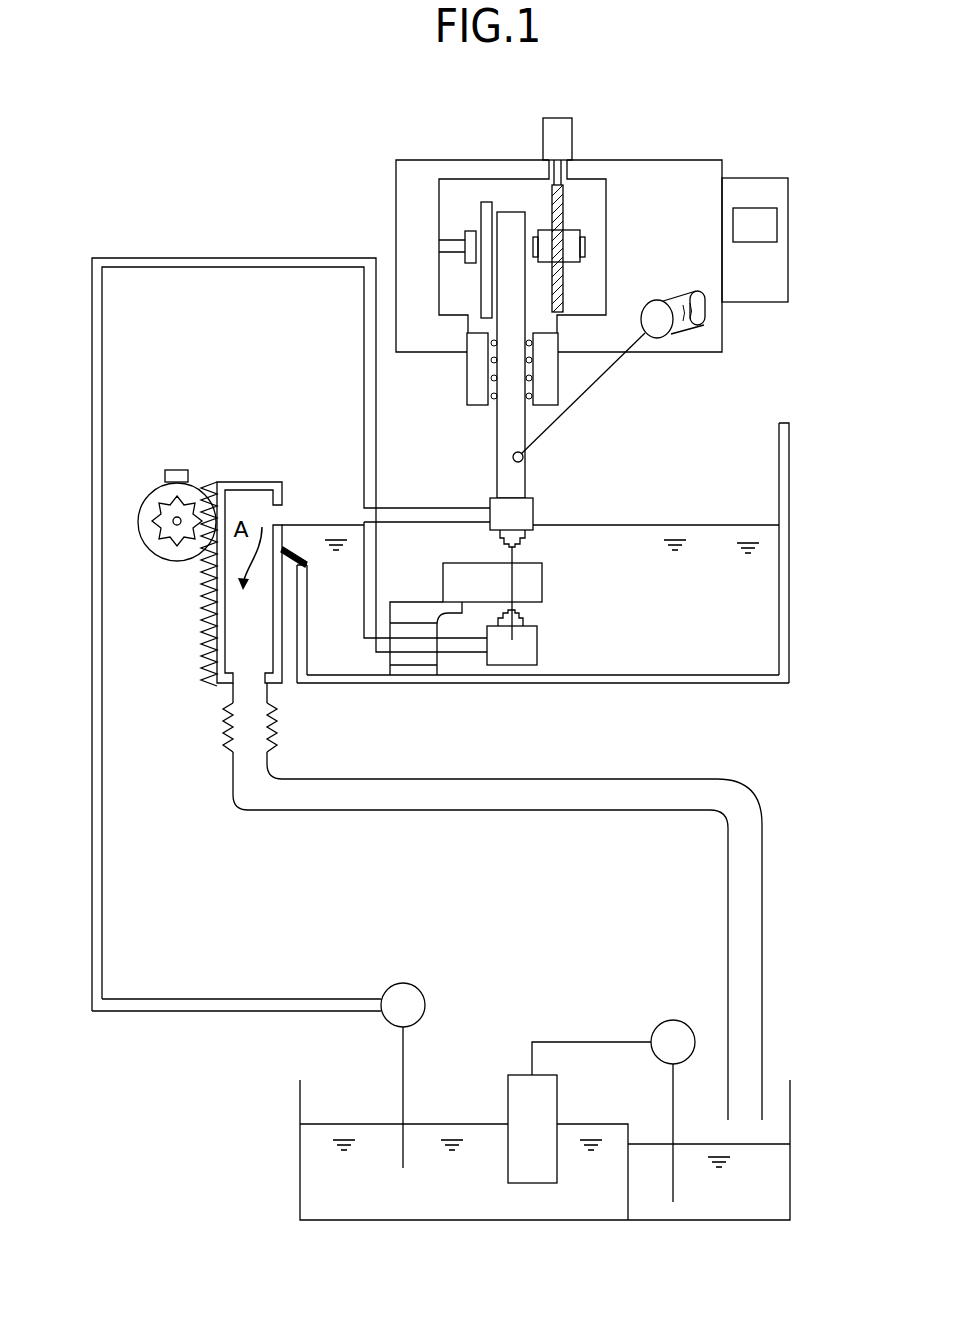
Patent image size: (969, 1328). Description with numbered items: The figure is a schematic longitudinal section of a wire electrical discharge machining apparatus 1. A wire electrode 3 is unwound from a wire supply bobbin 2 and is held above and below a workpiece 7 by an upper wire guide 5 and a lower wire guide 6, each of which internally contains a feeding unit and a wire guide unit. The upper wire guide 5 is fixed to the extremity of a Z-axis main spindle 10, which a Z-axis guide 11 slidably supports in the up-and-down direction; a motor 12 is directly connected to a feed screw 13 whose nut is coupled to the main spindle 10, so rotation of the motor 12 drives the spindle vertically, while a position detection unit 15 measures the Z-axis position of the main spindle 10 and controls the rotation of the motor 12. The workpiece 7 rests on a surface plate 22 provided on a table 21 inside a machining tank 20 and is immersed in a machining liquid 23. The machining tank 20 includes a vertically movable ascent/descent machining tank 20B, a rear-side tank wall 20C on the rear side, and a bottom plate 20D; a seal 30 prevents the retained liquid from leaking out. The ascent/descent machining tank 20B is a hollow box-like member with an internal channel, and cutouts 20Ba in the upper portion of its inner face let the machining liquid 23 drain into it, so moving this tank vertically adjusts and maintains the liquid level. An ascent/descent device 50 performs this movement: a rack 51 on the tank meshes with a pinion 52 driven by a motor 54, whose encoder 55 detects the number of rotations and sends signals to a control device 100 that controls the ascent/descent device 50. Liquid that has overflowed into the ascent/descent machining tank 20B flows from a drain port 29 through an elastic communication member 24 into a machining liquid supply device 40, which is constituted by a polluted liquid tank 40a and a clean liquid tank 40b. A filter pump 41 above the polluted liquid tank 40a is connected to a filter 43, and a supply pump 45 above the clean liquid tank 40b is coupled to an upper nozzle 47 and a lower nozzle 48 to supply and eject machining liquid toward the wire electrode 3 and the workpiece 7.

The wire electrical discharge machining apparatus 1 is at (668, 135).
The control device 100 is at (741, 178).
The wire supply bobbin 2 is at (690, 345).
The wire electrode 3 is at (600, 385).
The upper wire guide 5 is at (535, 510).
The lower wire guide 6 is at (537, 650).
The workpiece 7 is at (542, 585).
The Z-axis main spindle 10 is at (497, 420).
The Z-axis guide 11 is at (467, 383).
The motor 12 is at (557, 118).
The feed screw 13 is at (565, 208).
The position detection unit 15 is at (470, 230).
The machining tank 20 is at (308, 472).
The ascent/descent machining tank 20B is at (228, 482).
The cutouts 20Ba is at (282, 515).
The rear-side tank wall 20C is at (790, 480).
The bottom plate 20D is at (497, 683).
The table 21 is at (390, 662).
The surface plate 22 is at (420, 602).
The machining liquid 23 is at (603, 525).
The elastic communication member 24 is at (225, 740).
The drain port 29 is at (235, 690).
The seal 30 is at (298, 548).
The machining liquid supply device 40 is at (790, 1178).
The polluted liquid tank 40a is at (731, 1220).
The clean liquid tank 40b is at (571, 1220).
The filter pump 41 is at (672, 1020).
The filter 43 is at (518, 1075).
The supply pump 45 is at (400, 983).
The upper nozzle 47 is at (497, 545).
The lower nozzle 48 is at (523, 615).
The ascent/descent device 50 is at (161, 510).
The rack 51 is at (202, 615).
The pinion 52 is at (175, 545).
The motor 54 is at (150, 495).
The encoder 55 is at (178, 470).